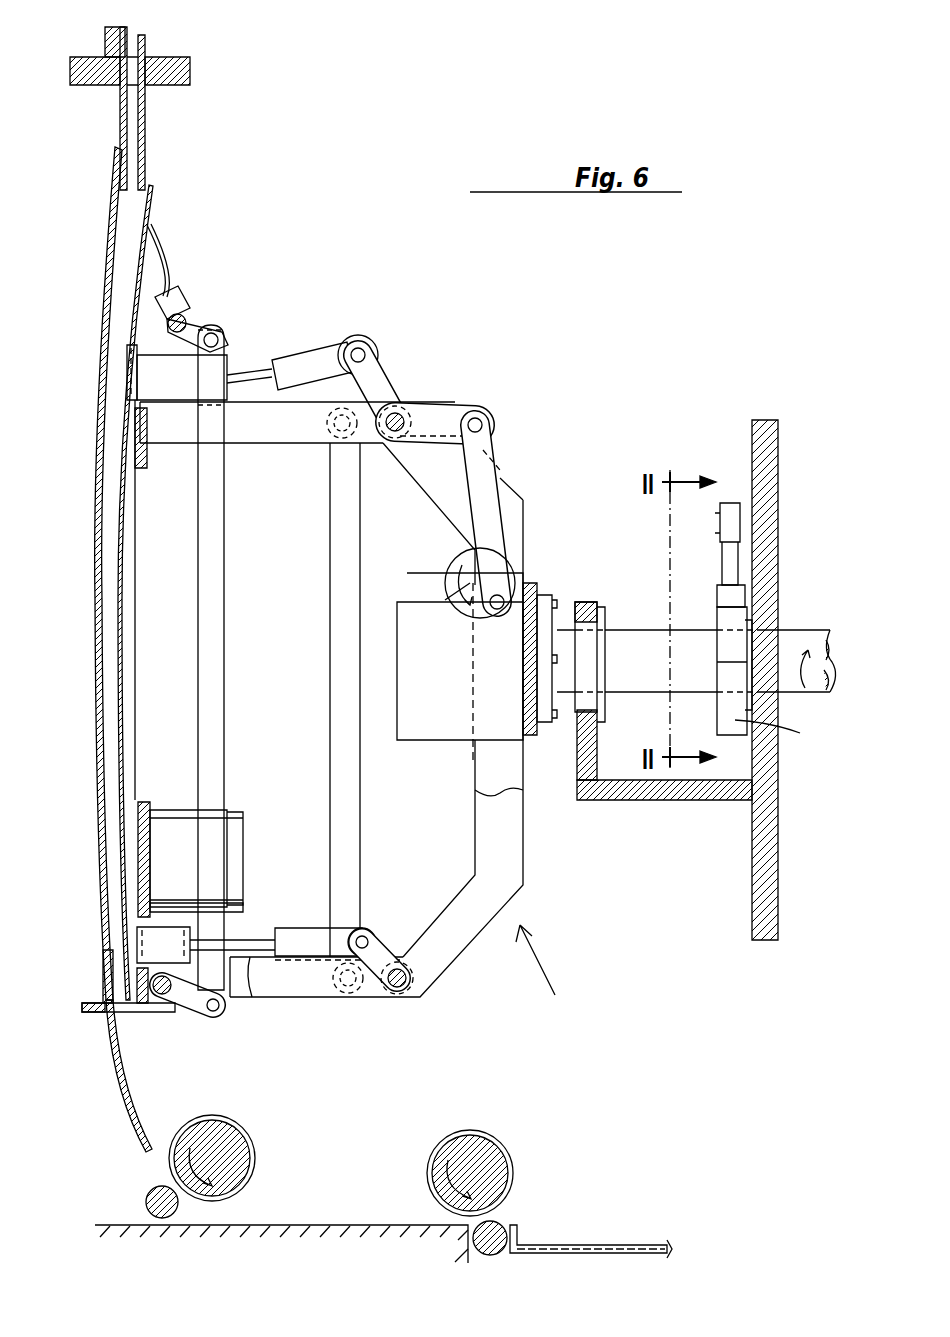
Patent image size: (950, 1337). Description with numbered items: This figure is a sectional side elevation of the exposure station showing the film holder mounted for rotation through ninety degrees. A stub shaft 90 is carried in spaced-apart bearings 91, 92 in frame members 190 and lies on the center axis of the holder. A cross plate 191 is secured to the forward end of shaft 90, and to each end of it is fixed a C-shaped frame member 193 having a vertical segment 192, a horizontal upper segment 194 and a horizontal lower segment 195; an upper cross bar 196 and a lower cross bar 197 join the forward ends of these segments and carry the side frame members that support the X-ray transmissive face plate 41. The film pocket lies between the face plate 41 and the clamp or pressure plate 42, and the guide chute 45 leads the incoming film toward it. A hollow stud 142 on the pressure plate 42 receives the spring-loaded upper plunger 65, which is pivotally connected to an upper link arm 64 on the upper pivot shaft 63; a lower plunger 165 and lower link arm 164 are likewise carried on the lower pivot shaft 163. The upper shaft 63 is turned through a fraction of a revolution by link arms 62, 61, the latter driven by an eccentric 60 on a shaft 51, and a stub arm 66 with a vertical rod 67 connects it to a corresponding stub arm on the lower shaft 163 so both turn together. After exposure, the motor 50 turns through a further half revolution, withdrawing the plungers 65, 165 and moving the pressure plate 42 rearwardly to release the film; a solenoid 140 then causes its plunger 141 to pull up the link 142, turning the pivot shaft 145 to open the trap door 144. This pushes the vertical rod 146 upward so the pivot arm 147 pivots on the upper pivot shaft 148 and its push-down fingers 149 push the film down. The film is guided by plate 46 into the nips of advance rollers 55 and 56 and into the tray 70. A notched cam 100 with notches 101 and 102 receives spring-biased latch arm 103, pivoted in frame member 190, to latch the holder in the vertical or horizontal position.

The face plate 41 is at (108, 200).
The clamp or pressure plate 42 is at (150, 195).
The guide chute 45 is at (131, 118).
The guide plate 46 is at (135, 1085).
The motor 50 is at (420, 690).
The shaft 51 is at (443, 616).
The advance roller 55 is at (248, 1132).
The advance roller 56 is at (500, 1140).
The eccentric 60 is at (460, 565).
The link arm 61 is at (487, 455).
The link arm 62 is at (455, 418).
The upper pivot shaft 63 is at (400, 415).
The upper link arm 64 is at (378, 385).
The upper plunger 65 is at (305, 372).
The stub arm 66 is at (352, 440).
The vertical rod 67 is at (340, 598).
The tray 70 is at (590, 1245).
The stub shaft 90 is at (625, 660).
The bearing 91 is at (588, 600).
The bearing 92 is at (765, 640).
The notched cam 100 is at (786, 736).
The notch 101 is at (738, 598).
The notch 102 is at (725, 617).
The latch arm 103 is at (732, 560).
The solenoid 140 is at (185, 845).
The plunger 141 is at (200, 912).
The hollow stud 142 is at (160, 372).
The trap door 144 is at (133, 1012).
The pivot shaft 145 is at (165, 994).
The vertical rod 146 is at (222, 545).
The pivot arm 147 is at (190, 300).
The upper pivot shaft 148 is at (168, 323).
The push-down finger 149 is at (165, 240).
The lower pivot shaft 163 is at (403, 985).
The lower link arm 164 is at (385, 950).
The lower plunger 165 is at (295, 928).
The frame member 190 is at (720, 790).
The cross plate 191 is at (530, 575).
The vertical segment 192 is at (510, 835).
The C-shaped frame member 193 is at (553, 977).
The horizontal upper segment 194 is at (290, 445).
The horizontal lower segment 195 is at (305, 990).
The upper cross bar 196 is at (147, 470).
The lower cross bar 197 is at (125, 990).